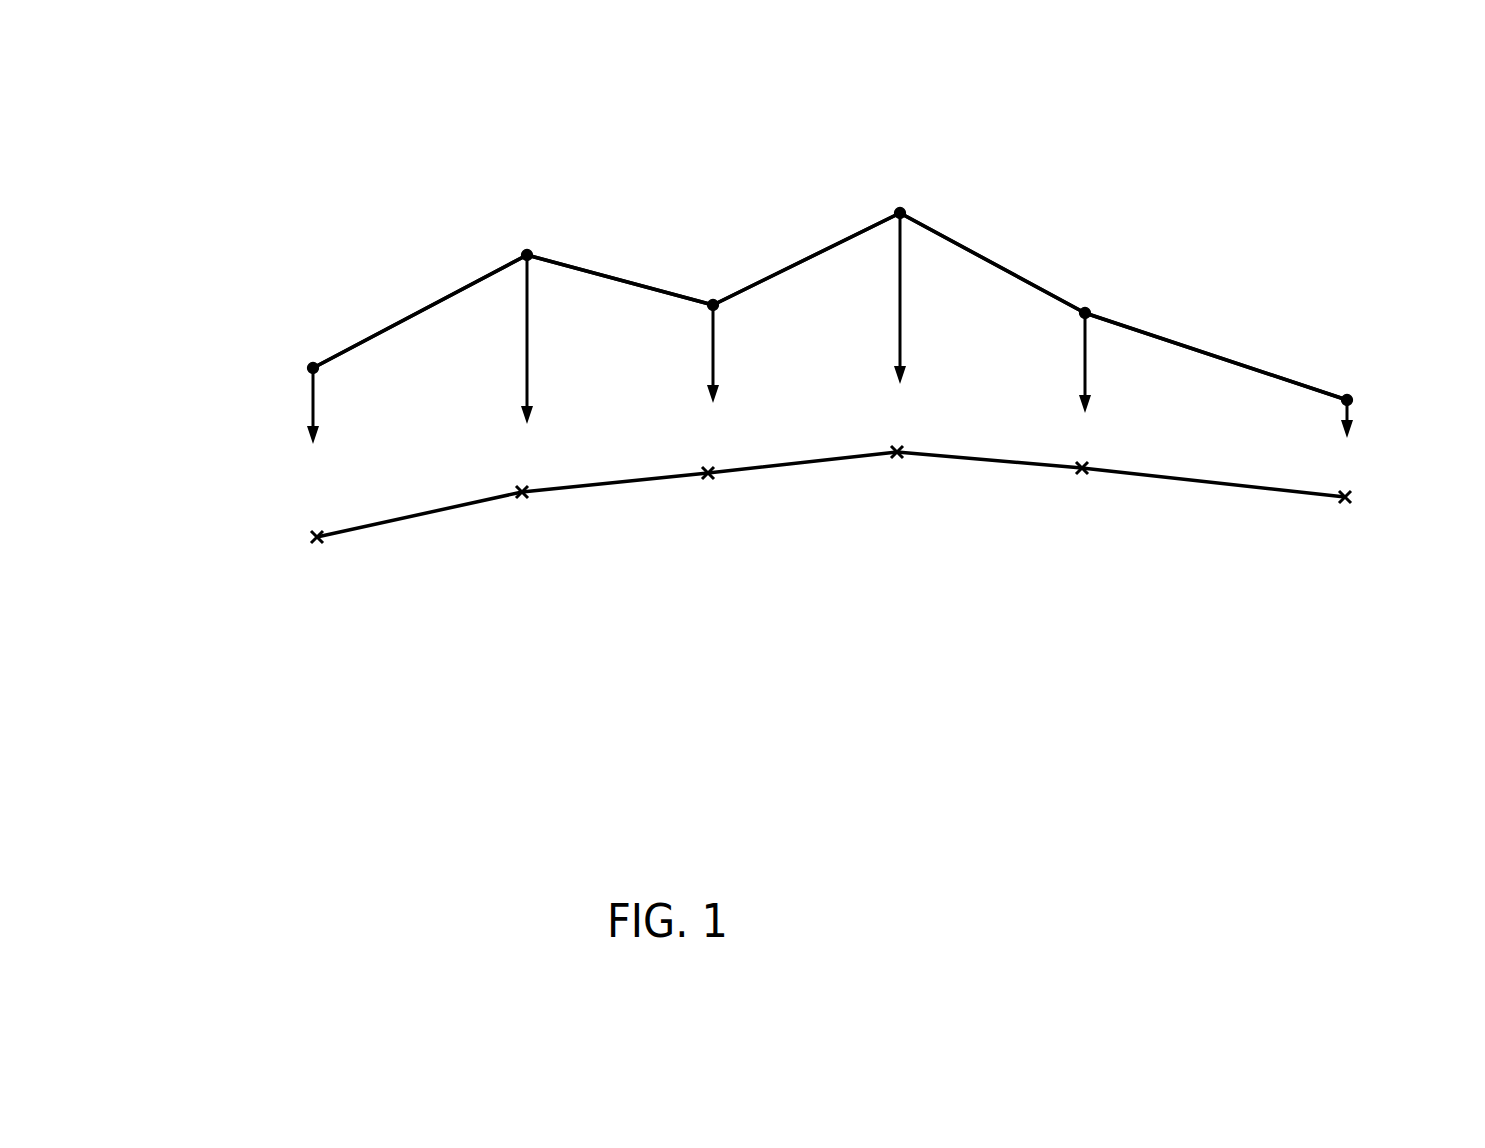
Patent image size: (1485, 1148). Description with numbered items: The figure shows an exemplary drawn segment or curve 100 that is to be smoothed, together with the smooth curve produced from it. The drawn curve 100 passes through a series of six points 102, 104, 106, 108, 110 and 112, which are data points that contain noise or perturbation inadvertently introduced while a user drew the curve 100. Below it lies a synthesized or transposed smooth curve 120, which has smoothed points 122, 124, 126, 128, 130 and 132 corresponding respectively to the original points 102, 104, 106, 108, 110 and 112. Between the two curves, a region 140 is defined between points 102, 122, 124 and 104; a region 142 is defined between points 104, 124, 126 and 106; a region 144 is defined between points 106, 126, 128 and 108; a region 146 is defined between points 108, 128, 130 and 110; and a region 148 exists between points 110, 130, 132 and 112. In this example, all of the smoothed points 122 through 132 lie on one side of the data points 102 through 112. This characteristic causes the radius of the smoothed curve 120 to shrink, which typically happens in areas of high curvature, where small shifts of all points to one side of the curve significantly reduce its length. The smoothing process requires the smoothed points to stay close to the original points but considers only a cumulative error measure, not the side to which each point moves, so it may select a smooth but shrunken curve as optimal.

The drawn segment or curve 100 is at (407, 320).
The point 102 is at (313, 368).
The point 104 is at (527, 255).
The point 106 is at (713, 305).
The point 108 is at (900, 213).
The point 110 is at (1085, 313).
The point 112 is at (1347, 400).
The synthesized or transposed smooth curve 120 is at (405, 518).
The smoothed point 122 is at (317, 537).
The smoothed point 124 is at (473, 503).
The smoothed point 126 is at (700, 476).
The smoothed point 128 is at (887, 453).
The smoothed point 130 is at (1060, 470).
The smoothed point 132 is at (1350, 497).
The region 140 is at (443, 414).
The region 142 is at (643, 368).
The region 144 is at (838, 350).
The region 146 is at (1017, 351).
The region 148 is at (1229, 425).